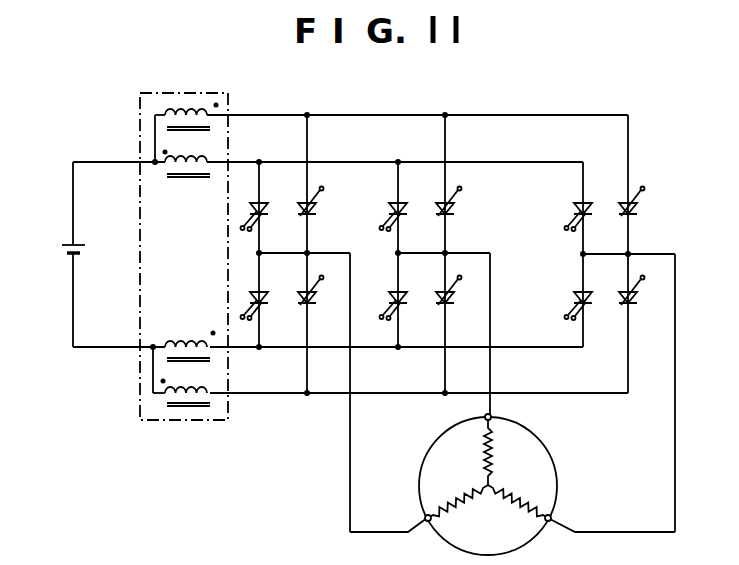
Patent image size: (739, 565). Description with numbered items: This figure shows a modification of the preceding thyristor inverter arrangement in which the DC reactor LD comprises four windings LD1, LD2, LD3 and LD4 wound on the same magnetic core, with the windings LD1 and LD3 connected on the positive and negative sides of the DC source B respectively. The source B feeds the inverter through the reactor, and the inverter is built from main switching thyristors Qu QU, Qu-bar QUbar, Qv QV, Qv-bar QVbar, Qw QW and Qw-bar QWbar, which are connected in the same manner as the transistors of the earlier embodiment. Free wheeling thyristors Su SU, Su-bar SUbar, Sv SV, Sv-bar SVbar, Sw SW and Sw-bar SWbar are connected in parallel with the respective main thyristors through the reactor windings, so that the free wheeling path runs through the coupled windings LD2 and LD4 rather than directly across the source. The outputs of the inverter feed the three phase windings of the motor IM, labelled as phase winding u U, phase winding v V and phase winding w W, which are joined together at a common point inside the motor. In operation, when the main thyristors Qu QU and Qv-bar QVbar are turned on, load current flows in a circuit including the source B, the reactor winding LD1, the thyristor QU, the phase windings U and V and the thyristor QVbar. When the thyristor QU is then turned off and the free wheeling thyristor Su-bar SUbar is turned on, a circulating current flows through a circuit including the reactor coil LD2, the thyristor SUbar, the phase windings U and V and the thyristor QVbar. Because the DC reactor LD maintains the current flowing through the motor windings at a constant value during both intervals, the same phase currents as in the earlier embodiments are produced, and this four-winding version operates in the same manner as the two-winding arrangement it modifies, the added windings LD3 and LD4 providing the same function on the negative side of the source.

The DC source B is at (83, 254).
The DC reactor LD is at (140, 401).
The first winding LD1 is at (168, 172).
The second winding LD2 is at (161, 398).
The third winding LD3 is at (192, 340).
The fourth winding LD4 is at (177, 108).
The thyristor Qu QU is at (269, 206).
The free wheeling thyristor Su SU is at (317, 206).
The thyristor Qv QV is at (408, 206).
The free wheeling thyristor Sv SV is at (455, 206).
The thyristor Qw QW is at (593, 206).
The free wheeling thyristor Sw SW is at (638, 206).
The thyristor Qu-bar QUbar is at (269, 295).
The free wheeling thyristor Su-bar SUbar is at (317, 295).
The thyristor Qv-bar QVbar is at (408, 295).
The free wheeling thyristor Sv-bar SVbar is at (455, 295).
The thyristor Qw-bar QWbar is at (593, 295).
The free wheeling thyristor Sw-bar SWbar is at (638, 295).
The induction motor IM is at (557, 471).
The phase winding u U is at (416, 513).
The phase winding v V is at (498, 407).
The phase winding w W is at (562, 513).